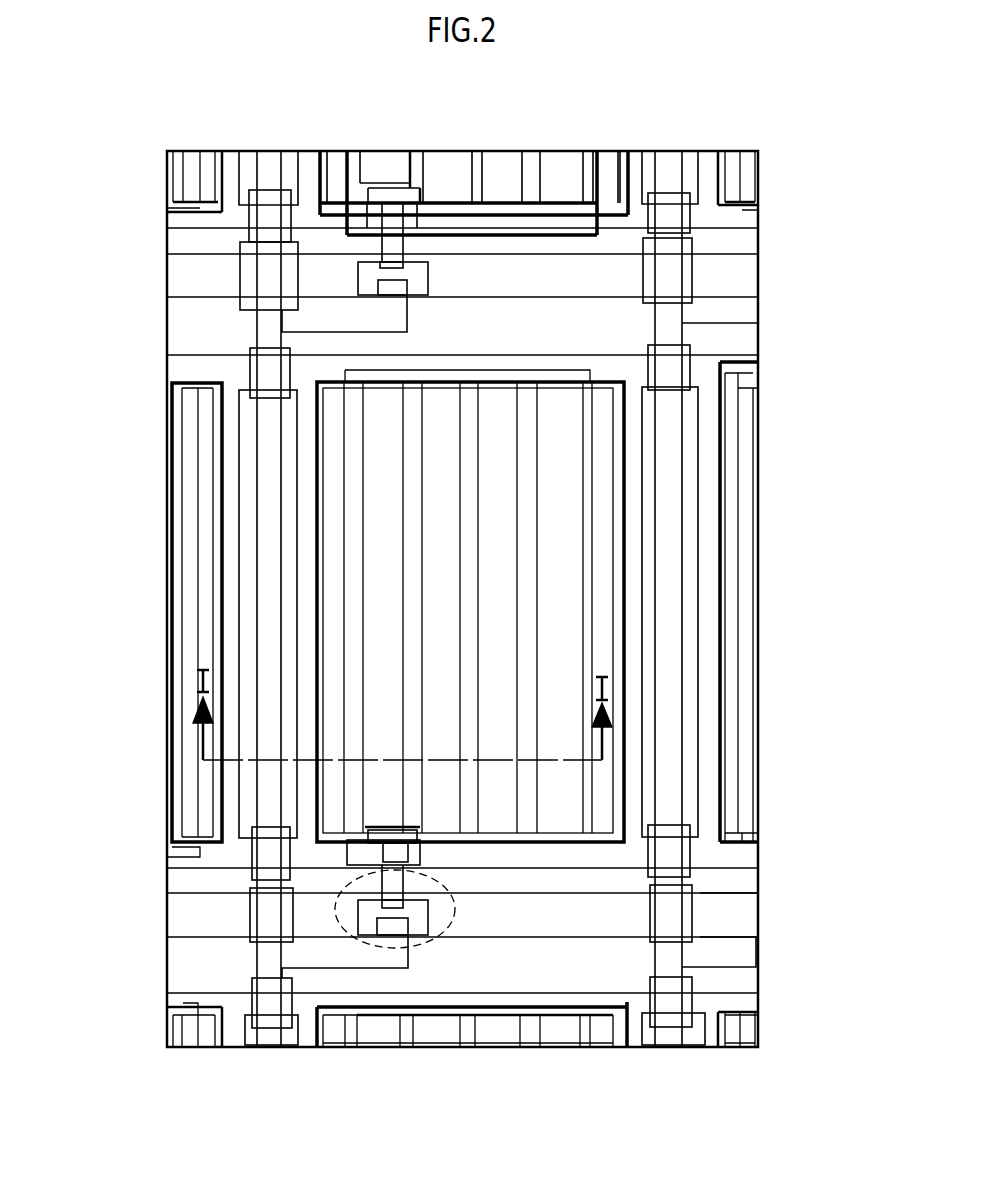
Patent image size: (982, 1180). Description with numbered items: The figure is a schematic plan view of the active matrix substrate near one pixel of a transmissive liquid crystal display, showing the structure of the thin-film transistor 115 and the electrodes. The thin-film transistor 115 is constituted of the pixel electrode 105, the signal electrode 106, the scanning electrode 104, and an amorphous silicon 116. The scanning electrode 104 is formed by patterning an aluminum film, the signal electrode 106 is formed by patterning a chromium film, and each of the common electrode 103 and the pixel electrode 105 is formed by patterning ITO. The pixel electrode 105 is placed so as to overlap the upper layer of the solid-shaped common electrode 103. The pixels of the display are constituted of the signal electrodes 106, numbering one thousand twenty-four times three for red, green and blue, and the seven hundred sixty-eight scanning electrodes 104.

The common electrode 103 is at (597, 380).
The scanning electrode 104 is at (743, 913).
The pixel electrode 105 is at (468, 590).
The signal electrode 106 is at (267, 803).
The thin-film transistor 115 is at (443, 935).
The amorphous silicon 116 is at (368, 917).